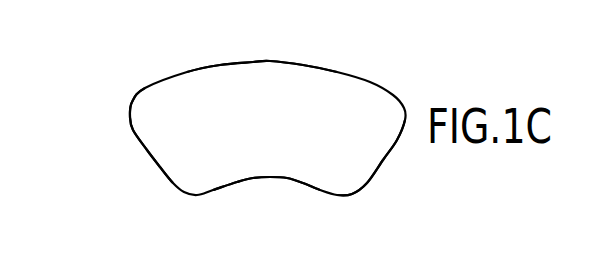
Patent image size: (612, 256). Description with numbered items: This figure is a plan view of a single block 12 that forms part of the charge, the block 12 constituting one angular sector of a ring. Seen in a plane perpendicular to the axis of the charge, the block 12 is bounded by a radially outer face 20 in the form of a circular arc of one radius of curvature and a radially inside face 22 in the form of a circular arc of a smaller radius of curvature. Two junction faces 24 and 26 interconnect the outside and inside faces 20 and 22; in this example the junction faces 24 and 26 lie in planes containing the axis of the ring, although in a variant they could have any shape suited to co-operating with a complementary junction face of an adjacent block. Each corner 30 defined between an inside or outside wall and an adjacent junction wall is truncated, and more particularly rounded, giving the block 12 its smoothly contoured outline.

The block 12 is at (373, 75).
The radially outer face 20 is at (265, 57).
The radially inside face 22 is at (267, 181).
The junction face 24 is at (141, 153).
The junction face 26 is at (393, 159).
The corner 30 is at (127, 110).